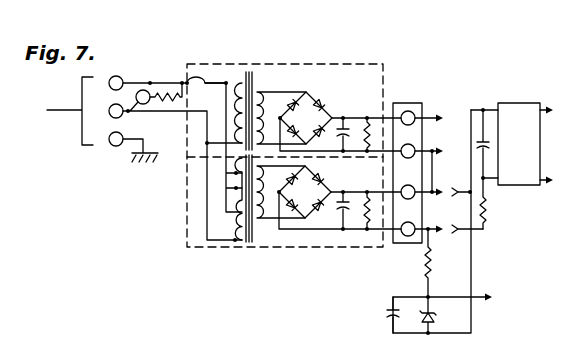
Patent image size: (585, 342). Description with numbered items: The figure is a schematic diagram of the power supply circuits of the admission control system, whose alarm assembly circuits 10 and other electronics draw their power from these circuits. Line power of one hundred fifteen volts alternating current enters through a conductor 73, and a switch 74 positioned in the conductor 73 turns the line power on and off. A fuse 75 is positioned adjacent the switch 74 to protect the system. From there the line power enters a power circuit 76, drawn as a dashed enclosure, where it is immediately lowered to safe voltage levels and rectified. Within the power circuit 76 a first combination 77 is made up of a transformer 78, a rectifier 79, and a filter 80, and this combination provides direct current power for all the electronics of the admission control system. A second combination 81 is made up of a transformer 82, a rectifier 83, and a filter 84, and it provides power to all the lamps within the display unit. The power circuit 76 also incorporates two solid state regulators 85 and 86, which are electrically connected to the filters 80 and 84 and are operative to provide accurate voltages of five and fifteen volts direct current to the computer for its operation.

The alarm assembly circuits 10 is at (277, 340).
The conductor 73 is at (78, 114).
The switch 74 is at (128, 83).
The fuse 75 is at (209, 78).
The power circuit 76 is at (327, 64).
The first combination 77 is at (205, 247).
The transformer 78 is at (268, 220).
The rectifier 79 is at (310, 215).
The filter 80 is at (357, 230).
The second combination 81 is at (213, 44).
The transformer 82 is at (226, 83).
The rectifier 83 is at (312, 97).
The filter 84 is at (353, 103).
The solid state regulator 85 is at (525, 103).
The solid state regulator 86 is at (458, 297).